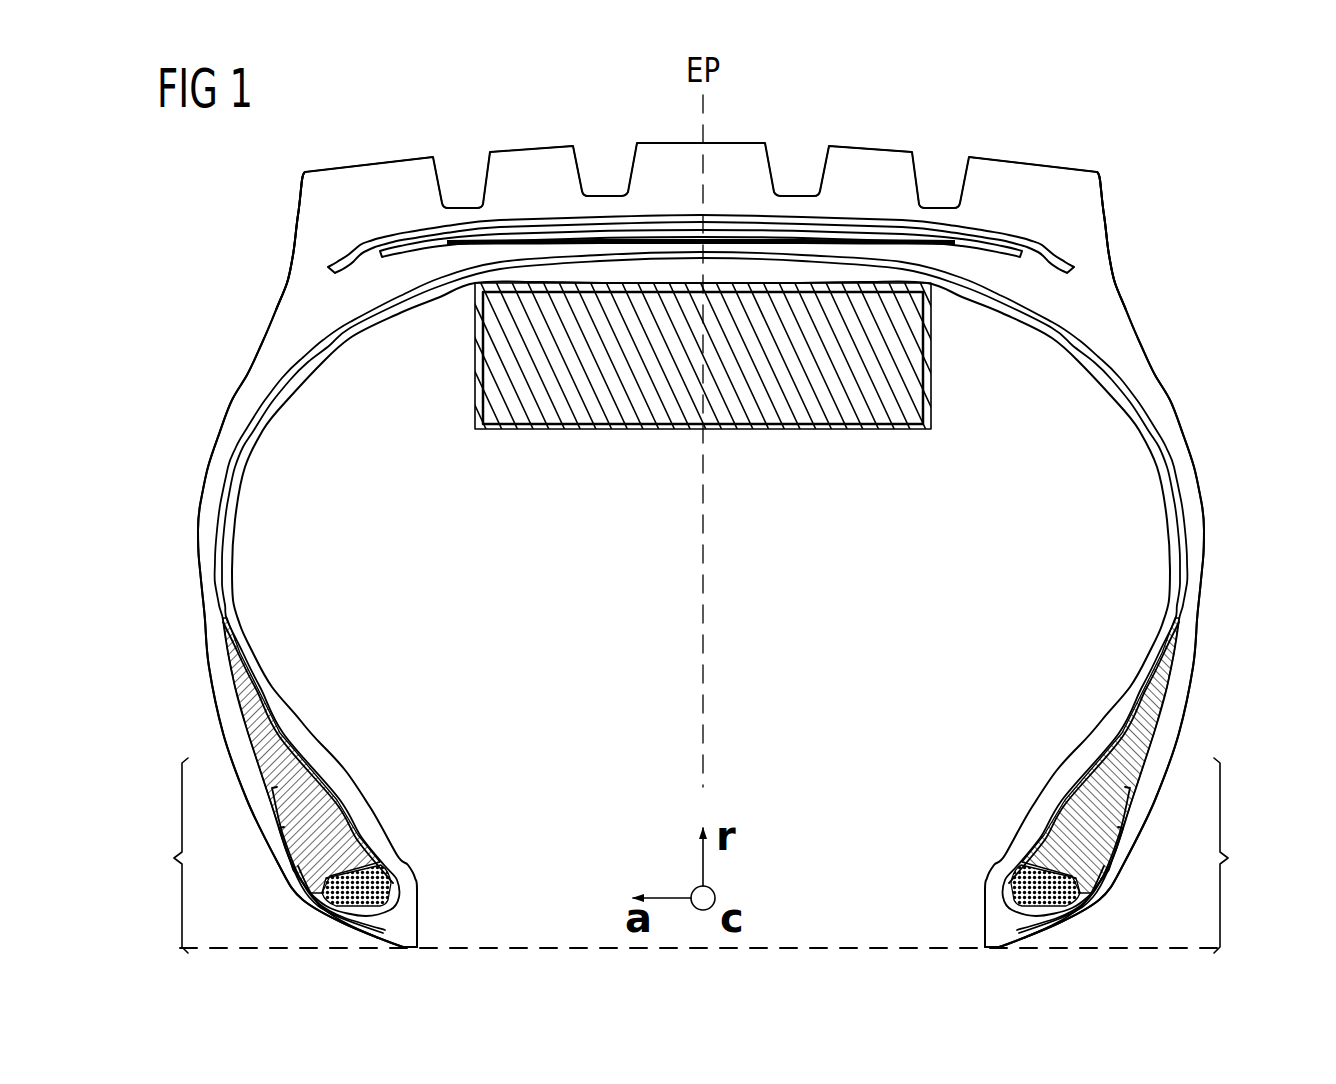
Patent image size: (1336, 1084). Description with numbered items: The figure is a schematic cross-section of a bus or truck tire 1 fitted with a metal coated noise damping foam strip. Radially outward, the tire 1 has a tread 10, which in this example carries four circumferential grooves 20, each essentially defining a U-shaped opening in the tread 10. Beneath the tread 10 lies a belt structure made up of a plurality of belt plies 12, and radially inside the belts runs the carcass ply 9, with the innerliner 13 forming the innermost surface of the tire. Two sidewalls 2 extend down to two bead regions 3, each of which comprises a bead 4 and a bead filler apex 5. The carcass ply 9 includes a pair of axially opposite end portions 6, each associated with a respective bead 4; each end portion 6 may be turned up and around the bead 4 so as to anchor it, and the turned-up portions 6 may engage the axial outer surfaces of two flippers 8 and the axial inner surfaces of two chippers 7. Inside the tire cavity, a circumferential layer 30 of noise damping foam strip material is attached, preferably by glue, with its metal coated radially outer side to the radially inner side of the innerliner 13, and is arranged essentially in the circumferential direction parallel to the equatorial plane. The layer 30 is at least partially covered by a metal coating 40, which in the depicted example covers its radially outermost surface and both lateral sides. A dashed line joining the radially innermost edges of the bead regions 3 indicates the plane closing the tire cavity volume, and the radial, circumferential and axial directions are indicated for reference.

The tire 1 is at (243, 243).
The sidewall 2 is at (226, 396).
The bead region 3 is at (702, 855).
The bead 4 is at (378, 882).
The bead filler apex 5 is at (309, 774).
The axial end portion of the carcass ply 6 is at (271, 793).
The chipper 7 is at (280, 833).
The flipper 8 is at (303, 879).
The carcass ply 9 is at (298, 367).
The tread 10 is at (1083, 201).
The belt ply 12 is at (634, 216).
The innerliner 13 is at (334, 345).
The circumferential groove 20 is at (459, 156).
The circumferential layer of noise damping foam strip material 30 is at (470, 353).
The metal coating 40 is at (474, 426).